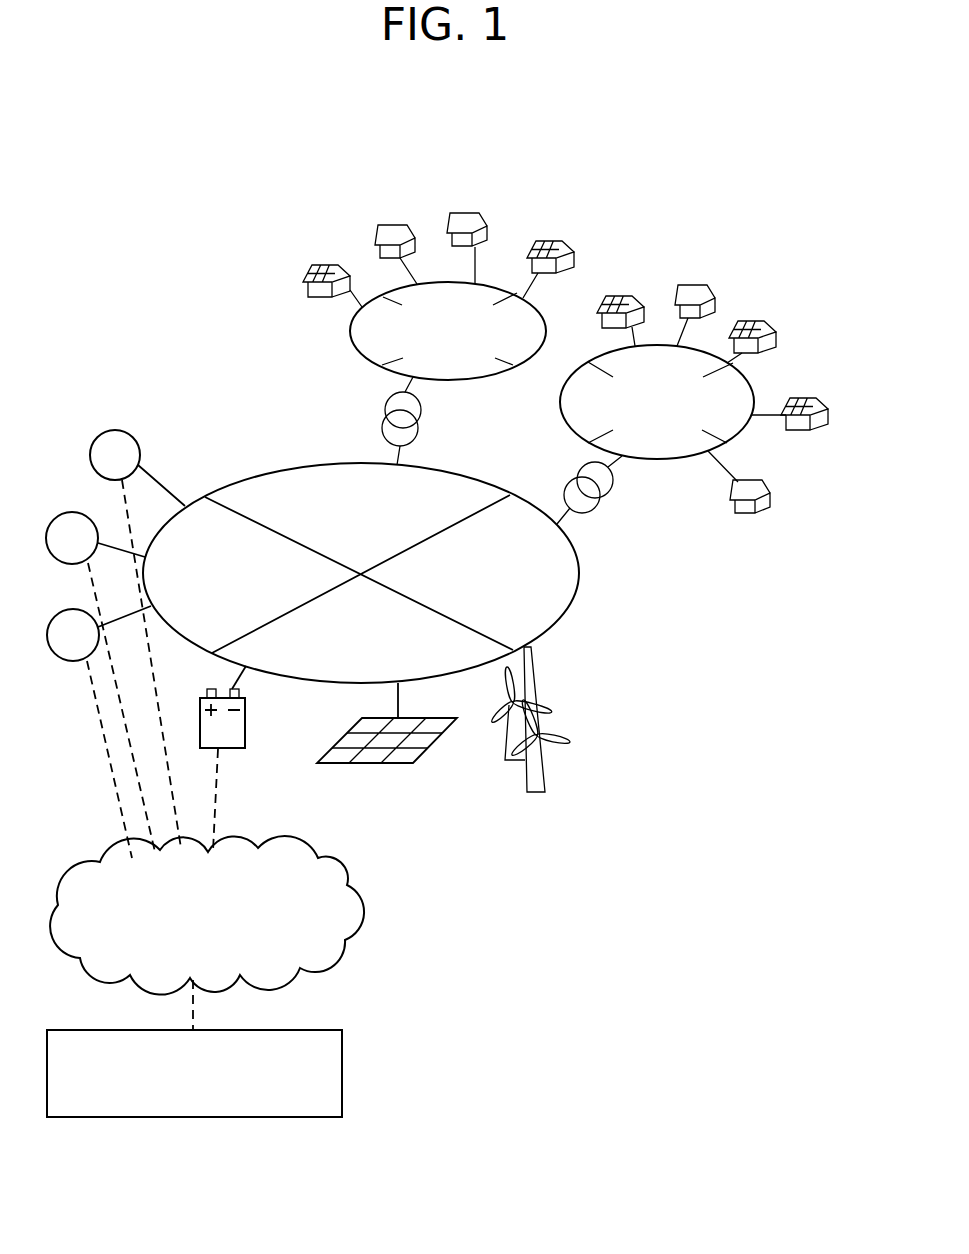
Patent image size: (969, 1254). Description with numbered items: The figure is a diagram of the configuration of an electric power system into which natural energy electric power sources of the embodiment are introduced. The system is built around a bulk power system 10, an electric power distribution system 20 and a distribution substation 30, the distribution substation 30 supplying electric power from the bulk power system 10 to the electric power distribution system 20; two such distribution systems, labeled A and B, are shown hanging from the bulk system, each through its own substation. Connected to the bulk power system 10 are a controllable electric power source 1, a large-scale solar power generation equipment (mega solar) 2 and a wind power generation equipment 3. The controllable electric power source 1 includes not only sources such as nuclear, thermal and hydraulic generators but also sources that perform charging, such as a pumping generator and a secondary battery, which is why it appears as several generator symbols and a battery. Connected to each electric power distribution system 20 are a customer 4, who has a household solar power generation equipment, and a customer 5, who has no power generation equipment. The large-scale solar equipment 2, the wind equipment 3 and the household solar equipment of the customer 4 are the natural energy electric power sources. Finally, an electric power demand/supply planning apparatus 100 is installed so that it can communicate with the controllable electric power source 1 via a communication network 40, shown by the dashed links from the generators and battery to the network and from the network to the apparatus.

The controllable electric power source 1 is at (105, 433).
The large-scale solar power generation equipment 2 is at (340, 765).
The wind power generation equipment 3 is at (541, 793).
The customer 4 is at (316, 266).
The customer 5 is at (386, 226).
The bulk power system 10 is at (215, 491).
The electric power distribution system 20 is at (357, 348).
The distribution substation 30 is at (386, 414).
The communication network 40 is at (75, 957).
The electric power demand/supply planning apparatus 100 is at (143, 1118).